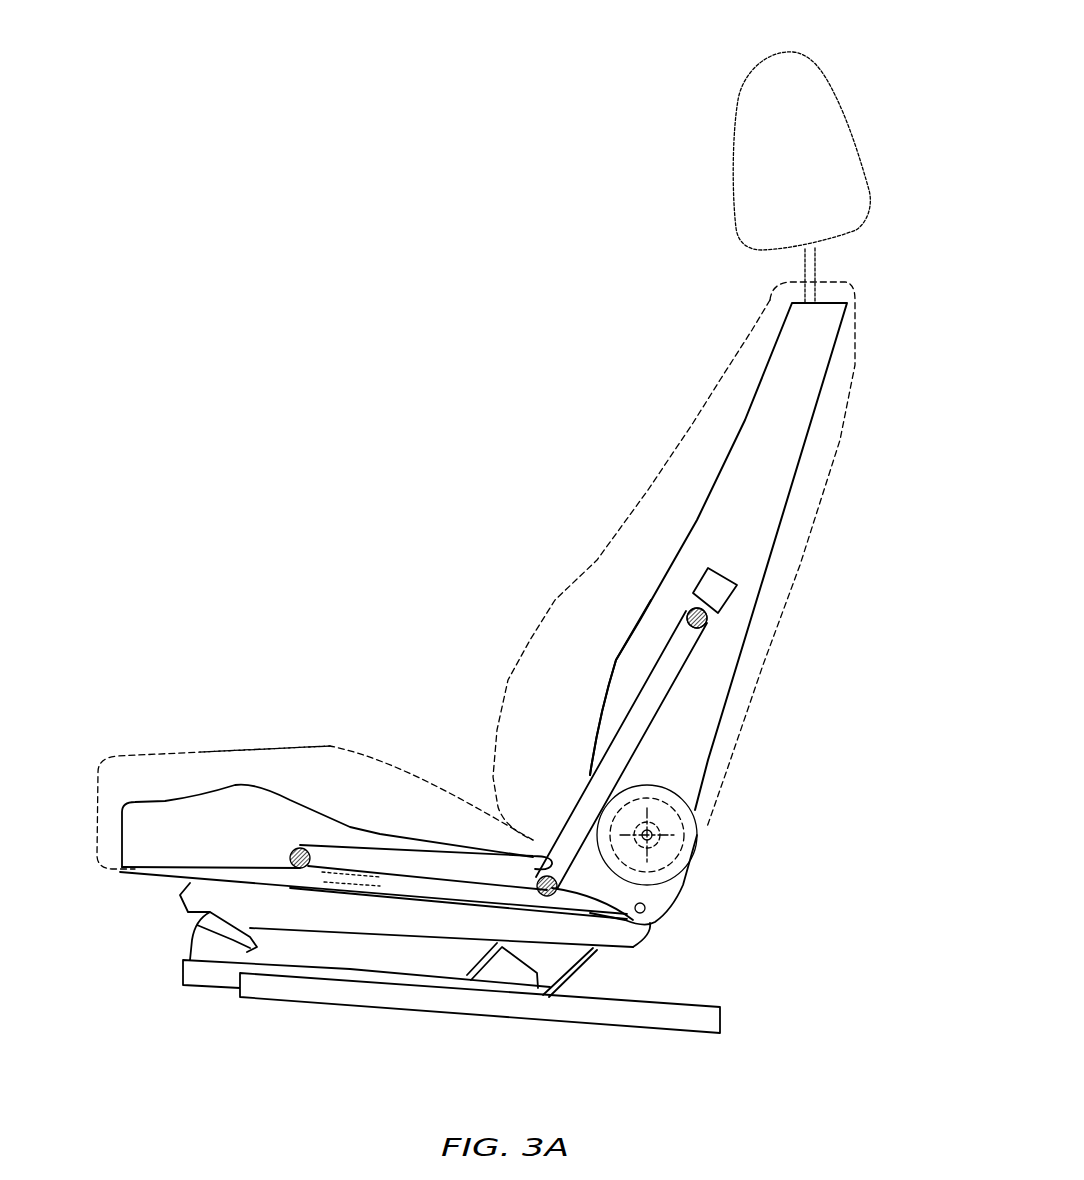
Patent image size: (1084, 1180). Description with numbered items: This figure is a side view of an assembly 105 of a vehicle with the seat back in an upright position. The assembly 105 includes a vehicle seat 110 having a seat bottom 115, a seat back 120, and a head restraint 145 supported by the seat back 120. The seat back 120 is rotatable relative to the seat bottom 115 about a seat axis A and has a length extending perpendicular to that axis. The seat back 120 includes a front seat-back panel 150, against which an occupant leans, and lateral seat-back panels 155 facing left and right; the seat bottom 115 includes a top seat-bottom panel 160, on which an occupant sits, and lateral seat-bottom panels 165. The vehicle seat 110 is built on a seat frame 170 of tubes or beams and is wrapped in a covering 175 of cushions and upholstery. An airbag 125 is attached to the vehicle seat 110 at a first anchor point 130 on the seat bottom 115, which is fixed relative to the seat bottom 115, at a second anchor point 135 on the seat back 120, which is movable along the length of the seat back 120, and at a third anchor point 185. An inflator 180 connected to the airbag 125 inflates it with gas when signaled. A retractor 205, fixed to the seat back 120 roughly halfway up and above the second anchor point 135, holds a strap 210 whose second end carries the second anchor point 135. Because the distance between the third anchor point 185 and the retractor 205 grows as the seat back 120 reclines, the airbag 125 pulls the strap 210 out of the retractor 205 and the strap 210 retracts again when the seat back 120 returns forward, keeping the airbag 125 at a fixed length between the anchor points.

The assembly 105 is at (865, 582).
The vehicle seat 110 is at (465, 188).
The seat bottom 115 is at (93, 795).
The seat back 120 is at (858, 335).
The airbag 125 is at (670, 693).
The first anchor point 130 is at (300, 868).
The second anchor point 135 is at (707, 623).
The head restraint 145 is at (763, 55).
The front seat-back panel 150 is at (690, 423).
The lateral seat-back panel 155 is at (782, 390).
The top seat-bottom panel 160 is at (192, 748).
The lateral seat-bottom panel 165 is at (215, 820).
The seat frame 170 is at (615, 662).
The covering 175 is at (435, 785).
The inflator 180 is at (337, 893).
The third anchor point 185 is at (553, 897).
The retractor 205 is at (707, 573).
The strap 210 is at (693, 607).
The seat axis A is at (652, 832).